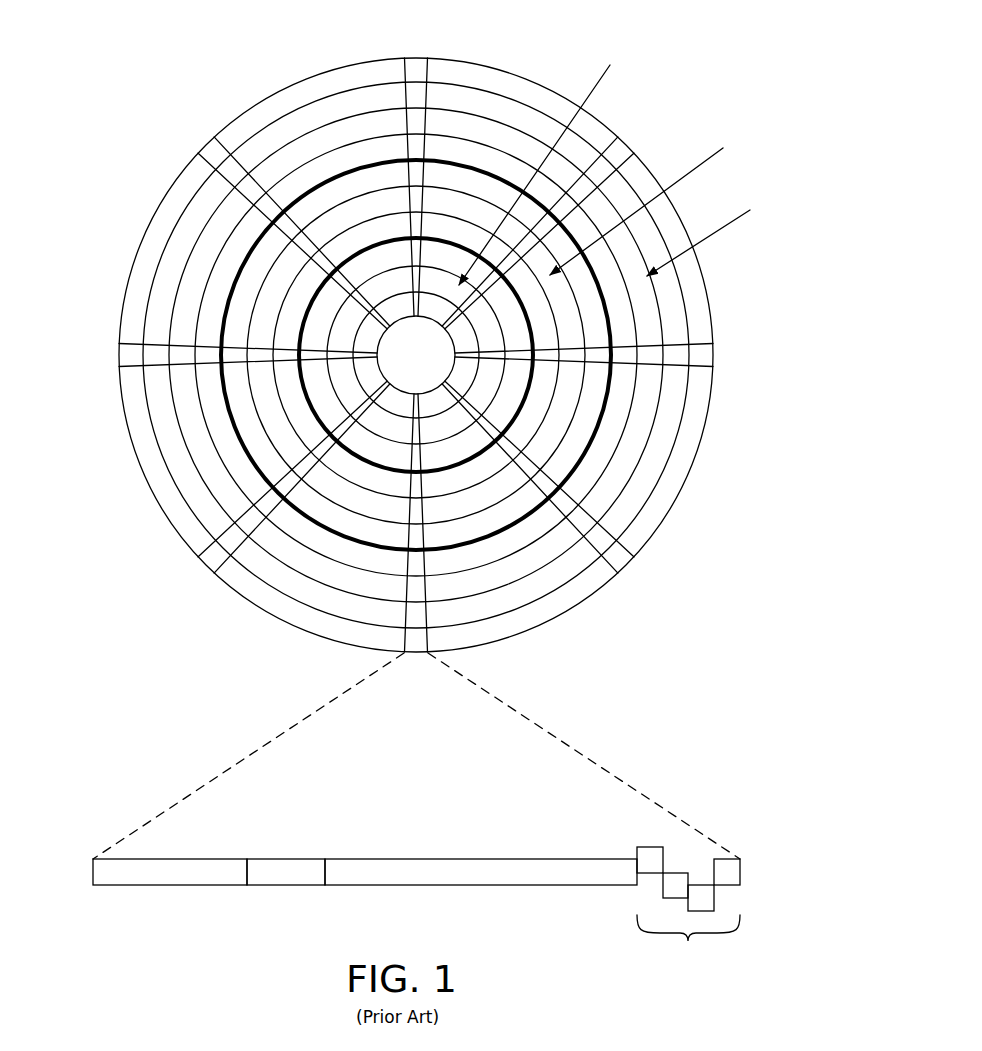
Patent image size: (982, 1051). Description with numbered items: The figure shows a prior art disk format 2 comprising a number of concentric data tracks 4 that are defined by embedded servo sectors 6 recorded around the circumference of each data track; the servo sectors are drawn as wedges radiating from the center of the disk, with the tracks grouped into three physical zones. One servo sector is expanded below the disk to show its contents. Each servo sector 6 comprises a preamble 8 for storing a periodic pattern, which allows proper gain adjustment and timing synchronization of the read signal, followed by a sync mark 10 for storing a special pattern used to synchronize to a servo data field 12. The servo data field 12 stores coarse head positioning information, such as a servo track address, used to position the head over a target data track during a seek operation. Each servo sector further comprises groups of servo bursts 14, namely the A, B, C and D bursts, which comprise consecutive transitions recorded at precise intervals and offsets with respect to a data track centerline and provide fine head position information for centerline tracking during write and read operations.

The disk format 2 is at (199, 61).
The data tracks 4 is at (517, 119).
The servo sectors 6 is at (417, 365).
The preamble 8 is at (151, 885).
The sync mark 10 is at (282, 885).
The servo data field 12 is at (468, 885).
The servo bursts 14 is at (626, 829).